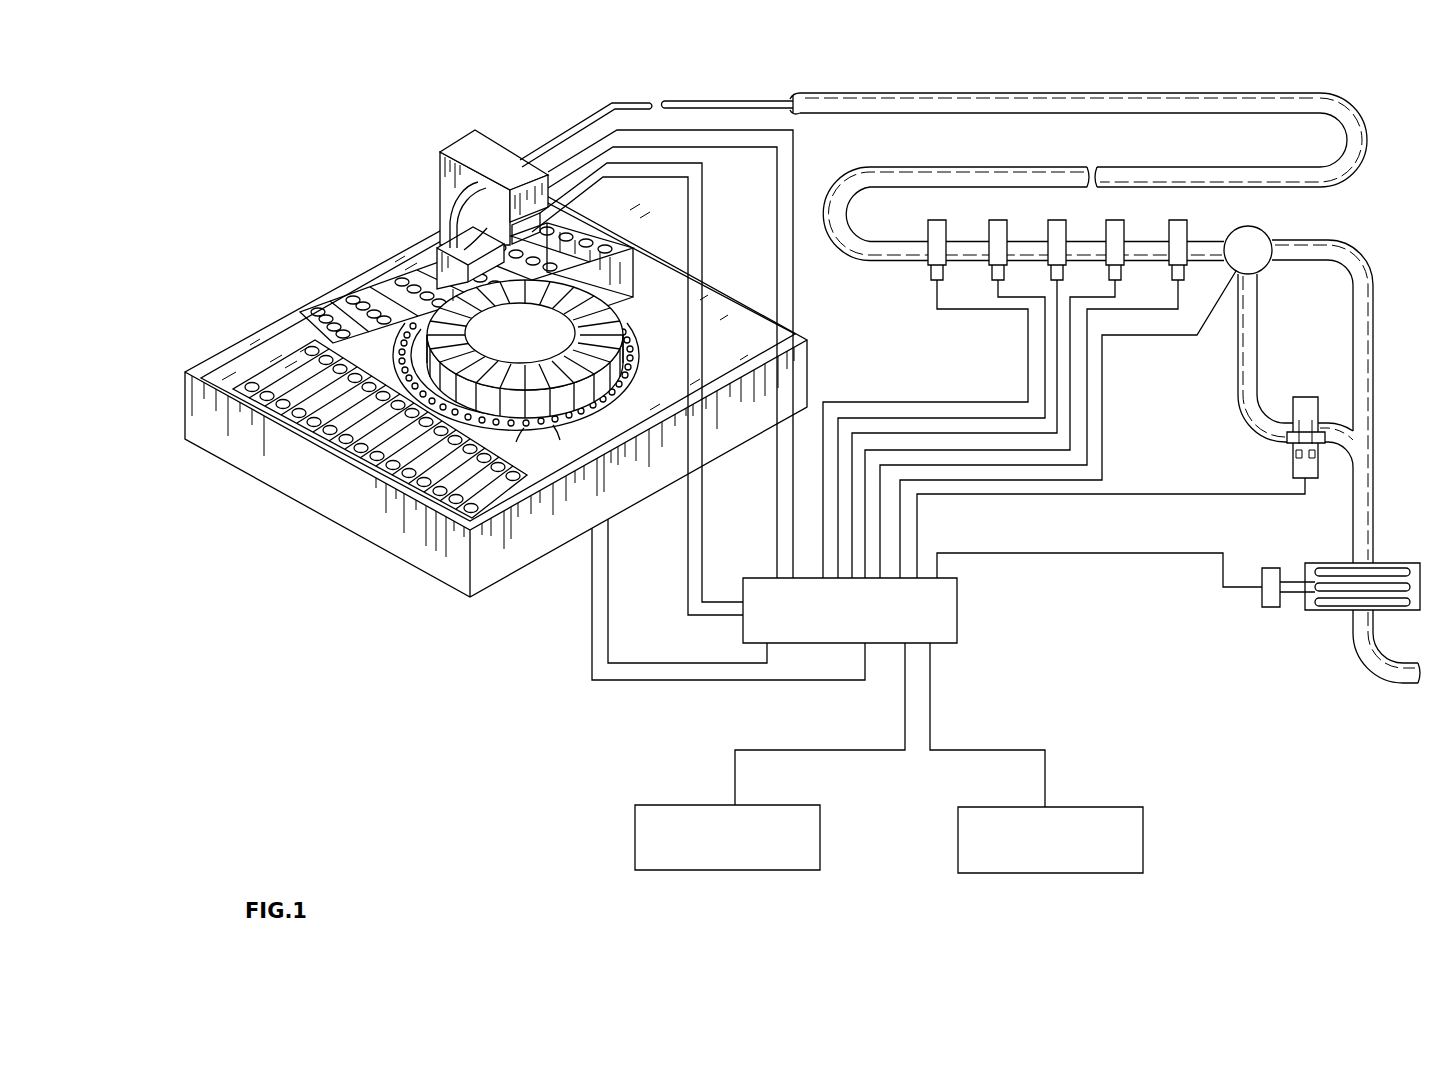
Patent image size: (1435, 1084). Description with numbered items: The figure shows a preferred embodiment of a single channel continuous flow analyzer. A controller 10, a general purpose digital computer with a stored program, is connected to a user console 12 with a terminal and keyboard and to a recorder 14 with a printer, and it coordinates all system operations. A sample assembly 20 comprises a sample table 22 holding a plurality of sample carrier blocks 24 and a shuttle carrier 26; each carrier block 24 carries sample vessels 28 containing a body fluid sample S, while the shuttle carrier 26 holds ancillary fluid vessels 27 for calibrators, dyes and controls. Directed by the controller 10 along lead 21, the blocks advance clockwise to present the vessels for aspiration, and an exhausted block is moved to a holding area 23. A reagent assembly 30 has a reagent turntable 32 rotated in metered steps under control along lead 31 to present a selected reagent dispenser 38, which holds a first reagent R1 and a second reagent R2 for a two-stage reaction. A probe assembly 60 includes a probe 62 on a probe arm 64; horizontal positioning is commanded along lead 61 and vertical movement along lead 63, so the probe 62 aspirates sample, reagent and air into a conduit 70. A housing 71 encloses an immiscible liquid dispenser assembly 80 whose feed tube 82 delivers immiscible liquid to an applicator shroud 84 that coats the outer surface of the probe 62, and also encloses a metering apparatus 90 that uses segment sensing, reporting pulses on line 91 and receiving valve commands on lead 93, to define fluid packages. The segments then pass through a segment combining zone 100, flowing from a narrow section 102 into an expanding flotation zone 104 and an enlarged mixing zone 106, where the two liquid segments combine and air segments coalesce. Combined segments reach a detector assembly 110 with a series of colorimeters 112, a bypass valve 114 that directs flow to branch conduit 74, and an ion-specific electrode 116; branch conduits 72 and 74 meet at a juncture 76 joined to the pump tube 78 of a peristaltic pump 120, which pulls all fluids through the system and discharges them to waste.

The controller 10 is at (945, 621).
The user console 12 is at (1143, 842).
The recorder 14 is at (666, 851).
The sample assembly 20 is at (222, 470).
The lead 21 is at (592, 630).
The sample table 22 is at (810, 365).
The holding area 23 is at (707, 305).
The sample carrier block 24 is at (400, 300).
The shuttle carrier 26 is at (403, 323).
The ancillary fluid vessel 27 is at (377, 338).
The sample vessel 28 is at (334, 329).
The reagent assembly 30 is at (645, 381).
The lead 31 is at (608, 625).
The reagent turntable 32 is at (528, 353).
The reagent dispenser 38 is at (632, 355).
The probe assembly 60 is at (434, 256).
The lead 61 is at (688, 568).
The probe 62 is at (486, 325).
The lead 63 is at (702, 545).
The probe arm 64 is at (405, 250).
The conduit 70 is at (582, 117).
The housing 71 is at (452, 148).
The branch conduit 72 is at (1258, 322).
The branch conduit 74 is at (1373, 318).
The juncture 76 is at (1375, 460).
The pump tube 78 is at (1375, 507).
The immiscible liquid dispenser assembly 80 is at (473, 162).
The feed tube 82 is at (529, 225).
The applicator shroud 84 is at (476, 272).
The metering apparatus 90 is at (466, 128).
The line 91 is at (777, 188).
The lead 93 is at (793, 172).
The segment combining zone 100 is at (858, 128).
The narrow section 102 is at (718, 98).
The flotation zone 104 is at (793, 96).
The mixing zone 106 is at (842, 93).
The detector assembly 110 is at (1198, 360).
The colorimeters 112 is at (930, 224).
The bypass valve 114 is at (1260, 232).
The ion-specific electrode 116 is at (1305, 397).
The peristaltic pump 120 is at (1412, 565).
The sample S is at (362, 312).
The first reagent R1 is at (549, 439).
The second reagent R2 is at (507, 441).